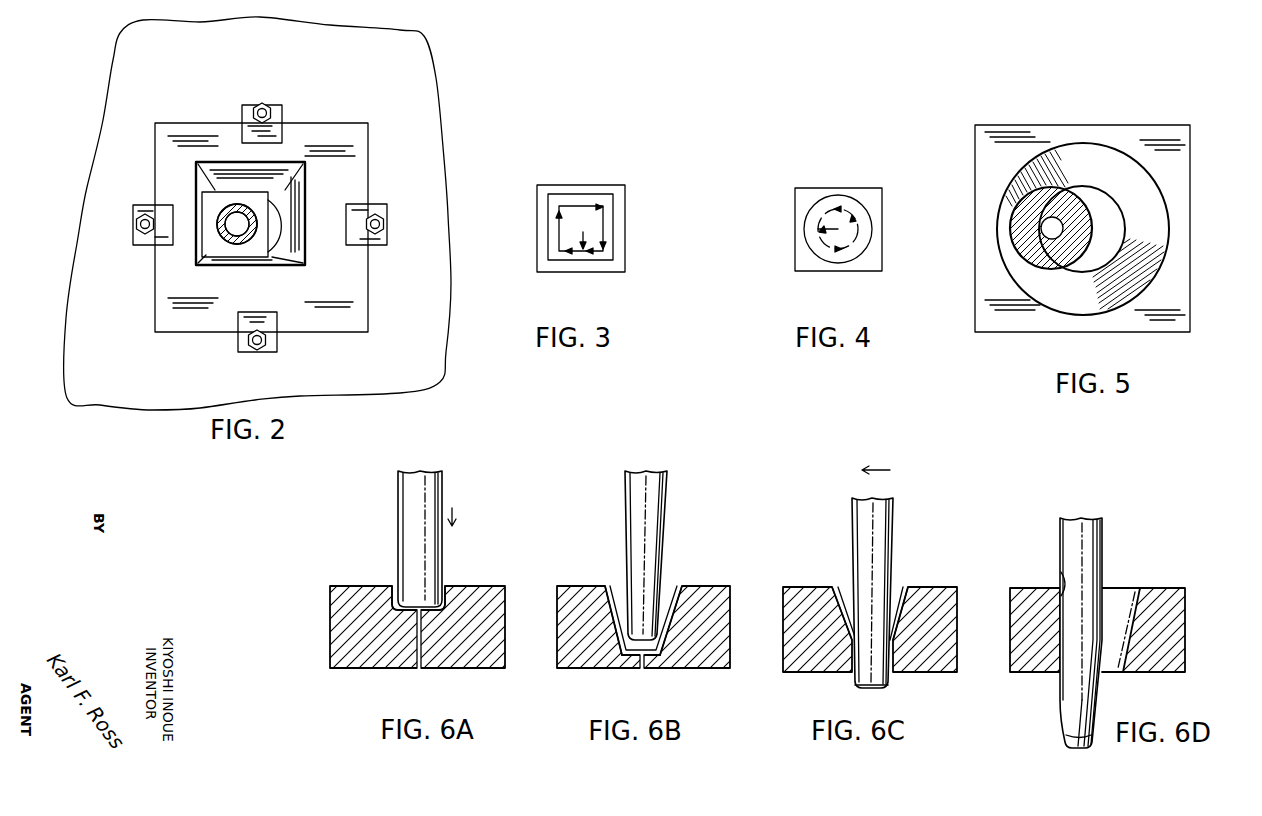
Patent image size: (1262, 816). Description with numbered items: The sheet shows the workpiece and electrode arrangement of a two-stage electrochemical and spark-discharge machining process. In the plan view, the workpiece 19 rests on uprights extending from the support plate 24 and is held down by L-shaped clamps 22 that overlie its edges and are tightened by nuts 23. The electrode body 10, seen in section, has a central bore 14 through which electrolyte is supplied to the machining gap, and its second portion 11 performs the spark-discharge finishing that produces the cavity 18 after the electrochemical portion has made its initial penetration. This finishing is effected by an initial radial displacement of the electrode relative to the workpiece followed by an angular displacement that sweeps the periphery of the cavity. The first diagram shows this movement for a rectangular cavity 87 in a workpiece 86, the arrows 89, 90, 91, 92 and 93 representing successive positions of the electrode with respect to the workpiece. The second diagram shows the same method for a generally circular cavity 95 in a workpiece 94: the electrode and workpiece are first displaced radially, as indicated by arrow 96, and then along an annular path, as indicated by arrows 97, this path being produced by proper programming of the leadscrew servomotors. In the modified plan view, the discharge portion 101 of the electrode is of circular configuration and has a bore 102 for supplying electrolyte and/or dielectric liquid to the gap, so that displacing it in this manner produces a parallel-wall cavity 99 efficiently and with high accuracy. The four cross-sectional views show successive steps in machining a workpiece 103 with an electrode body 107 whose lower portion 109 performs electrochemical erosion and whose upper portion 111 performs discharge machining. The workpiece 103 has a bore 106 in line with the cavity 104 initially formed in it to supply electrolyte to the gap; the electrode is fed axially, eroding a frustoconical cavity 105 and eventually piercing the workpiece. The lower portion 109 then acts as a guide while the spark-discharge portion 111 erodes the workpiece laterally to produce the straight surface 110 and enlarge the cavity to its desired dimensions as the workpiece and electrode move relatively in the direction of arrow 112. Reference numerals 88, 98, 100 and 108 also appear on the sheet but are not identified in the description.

In FIG. 2, the electrode body 10 is at (233, 238).
In FIG. 2, the second portion 11 is at (265, 252).
In FIG. 2, the central bore 14 is at (224, 234).
In FIG. 2, the cavity 18 is at (307, 176).
In FIG. 2, the workpiece 19 is at (370, 124).
In FIG. 2, the L-shaped clamps 22 is at (280, 106).
In FIG. 2, the nuts 23 is at (252, 106).
In FIG. 2, the support plate 24 is at (428, 303).
In FIG. 3, the workpiece 86 is at (626, 185).
In FIG. 3, the rectangular cavity 87 is at (585, 194).
In FIG. 3, the feed direction 88 is at (586, 232).
In FIG. 3, the arrow 89 is at (568, 251).
In FIG. 3, the arrow 90 is at (557, 228).
In FIG. 3, the arrow 91 is at (578, 206).
In FIG. 3, the arrow 92 is at (604, 220).
In FIG. 3, the arrow 93 is at (598, 251).
In FIG. 4, the workpiece 94 is at (862, 188).
In FIG. 4, the cavity 95 is at (835, 196).
In FIG. 4, the arrow 96 is at (828, 244).
In FIG. 4, the arrows 97 is at (858, 240).
In FIG. 5, the workpiece plate 98 is at (1000, 124).
In FIG. 5, the parallel-wall cavity 99 is at (1090, 145).
In FIG. 5, the inner circle 100 is at (1122, 210).
In FIG. 5, the discharge portion 101 is at (1028, 263).
In FIG. 5, the bore 102 is at (1043, 218).
In FIG. 6A, the workpiece 103 is at (455, 586).
In FIG. 6B, the workpiece 103 is at (712, 586).
In FIG. 6C, the workpiece 103 is at (925, 587).
In FIG. 6D, the workpiece 103 is at (1150, 588).
In FIG. 6A, the cavity 104 is at (395, 587).
In FIG. 6B, the frustoconical cavity 105 is at (610, 587).
In FIG. 6C, the frustoconical cavity 105 is at (840, 588).
In FIG. 6A, the bore 106 is at (420, 668).
In FIG. 6B, the bore 106 is at (650, 668).
In FIG. 6A, the electrode body 107 is at (443, 494).
In FIG. 6B, the electrode body 107 is at (668, 497).
In FIG. 6C, the electrode body 107 is at (893, 502).
In FIG. 6D, the electrode body 107 is at (1103, 531).
In FIG. 6B, the recess bottom 108 is at (632, 670).
In FIG. 6B, the lower portion 109 is at (672, 586).
In FIG. 6C, the lower portion 109 is at (888, 687).
In FIG. 6D, the straight surface 110 is at (1062, 580).
In FIG. 6D, the upper portion 111 is at (1061, 706).
In FIG. 6C, the arrow 112 is at (888, 468).